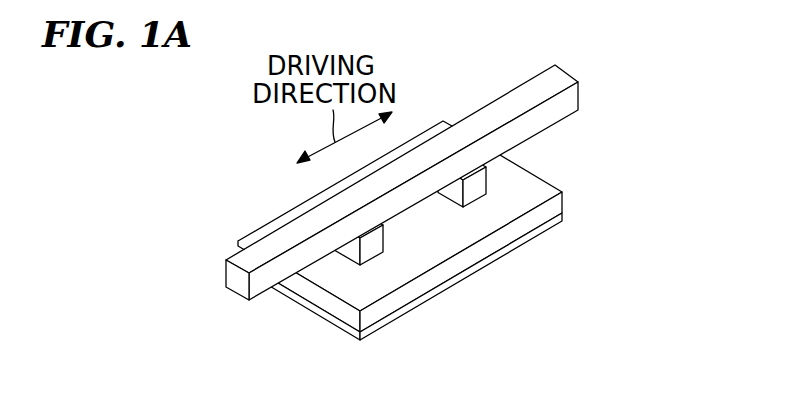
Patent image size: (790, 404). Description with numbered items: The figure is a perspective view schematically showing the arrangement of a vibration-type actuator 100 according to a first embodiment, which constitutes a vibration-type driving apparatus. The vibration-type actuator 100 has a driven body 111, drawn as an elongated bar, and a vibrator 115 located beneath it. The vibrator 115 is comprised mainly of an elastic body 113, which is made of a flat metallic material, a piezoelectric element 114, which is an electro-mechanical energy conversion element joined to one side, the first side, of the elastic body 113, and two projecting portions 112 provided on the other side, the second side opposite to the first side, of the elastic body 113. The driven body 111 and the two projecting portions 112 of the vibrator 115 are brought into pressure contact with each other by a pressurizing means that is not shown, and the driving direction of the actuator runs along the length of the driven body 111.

The vibration-type actuator 100 is at (431, 74).
The driven body 111 is at (282, 238).
The projecting portions 112 is at (475, 190).
The elastic body 113 is at (563, 206).
The piezoelectric element 114 is at (546, 226).
The vibrator 115 is at (486, 256).